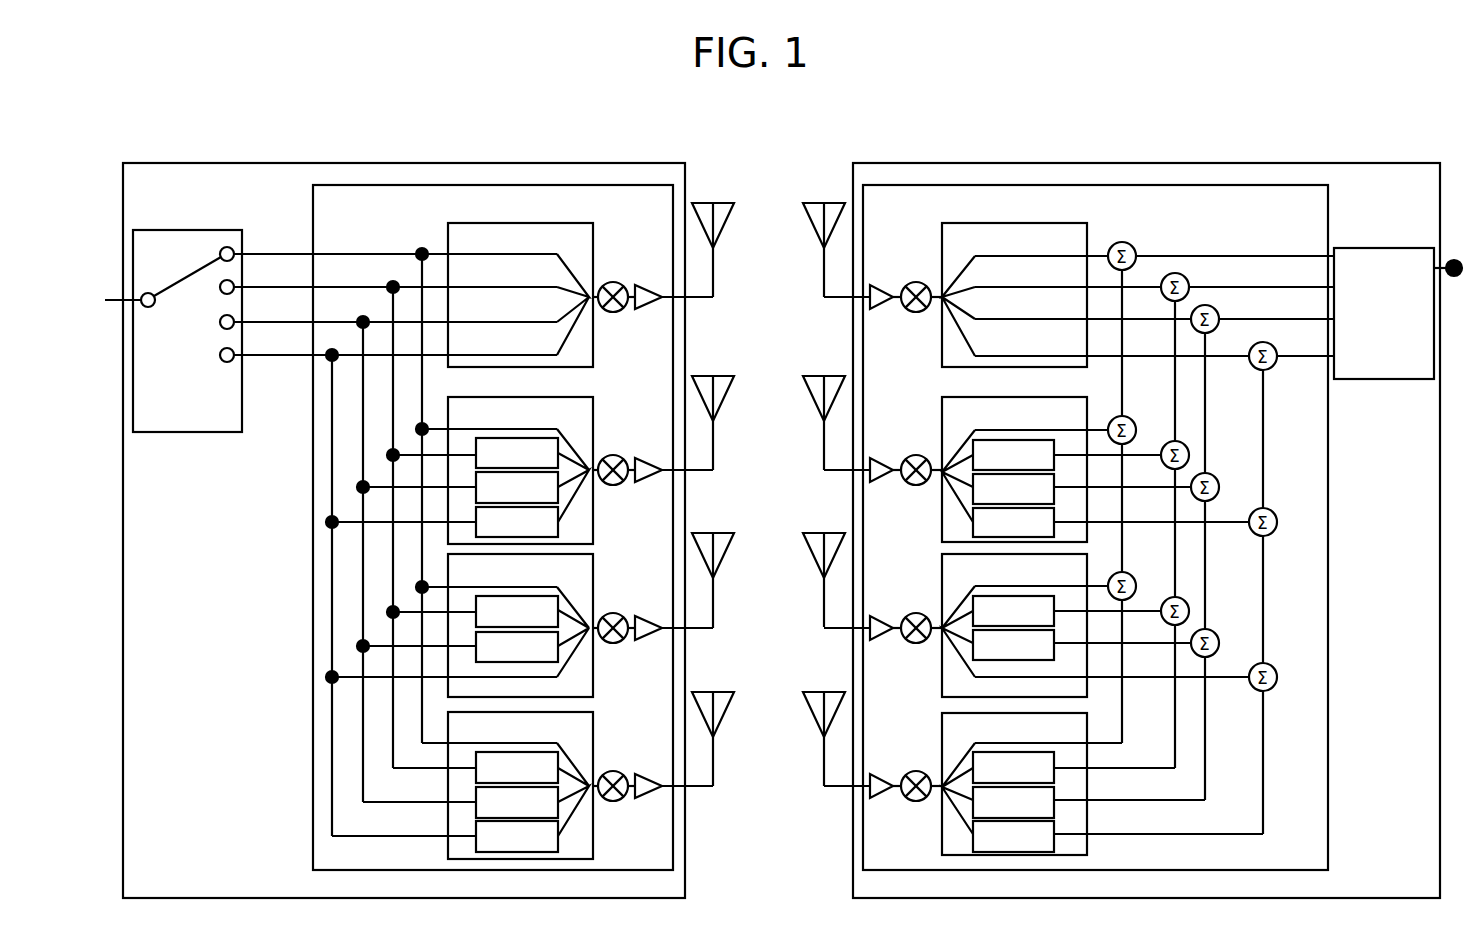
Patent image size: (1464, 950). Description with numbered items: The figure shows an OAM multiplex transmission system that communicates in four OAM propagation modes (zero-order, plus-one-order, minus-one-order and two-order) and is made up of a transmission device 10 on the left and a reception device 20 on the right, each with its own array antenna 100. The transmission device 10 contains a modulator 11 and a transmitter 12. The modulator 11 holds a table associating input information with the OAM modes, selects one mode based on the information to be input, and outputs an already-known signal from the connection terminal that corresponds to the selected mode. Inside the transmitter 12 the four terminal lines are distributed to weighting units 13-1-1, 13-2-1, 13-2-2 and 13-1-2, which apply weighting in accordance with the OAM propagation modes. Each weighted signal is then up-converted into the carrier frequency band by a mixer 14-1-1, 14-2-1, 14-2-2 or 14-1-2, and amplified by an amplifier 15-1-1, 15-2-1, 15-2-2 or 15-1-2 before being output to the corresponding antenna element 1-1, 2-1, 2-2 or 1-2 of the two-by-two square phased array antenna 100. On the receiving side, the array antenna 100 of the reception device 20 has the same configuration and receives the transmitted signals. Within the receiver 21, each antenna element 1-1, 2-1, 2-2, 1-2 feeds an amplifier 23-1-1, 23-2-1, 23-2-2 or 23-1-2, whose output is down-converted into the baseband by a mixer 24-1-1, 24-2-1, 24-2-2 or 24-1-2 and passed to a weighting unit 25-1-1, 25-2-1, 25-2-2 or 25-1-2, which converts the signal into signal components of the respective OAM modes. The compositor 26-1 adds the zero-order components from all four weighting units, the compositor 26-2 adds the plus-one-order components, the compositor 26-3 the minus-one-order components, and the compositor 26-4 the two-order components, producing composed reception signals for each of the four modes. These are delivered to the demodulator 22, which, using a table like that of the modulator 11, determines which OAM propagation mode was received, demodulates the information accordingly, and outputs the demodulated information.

The transmission device 10 is at (420, 157).
The modulator 11 is at (172, 229).
The transmitter 12 is at (313, 200).
The weighting unit 13-1-1 is at (558, 223).
The weighting unit 13-2-1 is at (556, 397).
The weighting unit 13-2-2 is at (593, 567).
The weighting unit 13-1-2 is at (593, 717).
The mixer 14-1-1 is at (620, 282).
The mixer 14-2-1 is at (620, 455).
The mixer 14-2-2 is at (620, 613).
The mixer 14-1-2 is at (620, 780).
The amplifier 15-1-1 is at (650, 310).
The amplifier 15-2-1 is at (650, 483).
The amplifier 15-2-2 is at (650, 641).
The amplifier 15-1-2 is at (650, 799).
The array antenna 100 is at (709, 184).
The antenna element 1-1 is at (726, 228).
The antenna element 2-1 is at (726, 401).
The antenna element 2-2 is at (726, 558).
The antenna element 1-2 is at (726, 717).
The reception device 20 is at (1108, 154).
The receiver 21 is at (1330, 192).
The demodulator 22 is at (1383, 248).
The amplifier 23-1-1 is at (900, 265).
The amplifier 23-2-1 is at (900, 438).
The amplifier 23-2-2 is at (870, 635).
The amplifier 23-1-2 is at (872, 798).
The mixer 24-1-1 is at (910, 314).
The mixer 24-2-1 is at (910, 487).
The mixer 24-2-2 is at (910, 644).
The mixer 24-1-2 is at (912, 802).
The weighting unit 25-1-1 is at (969, 223).
The weighting unit 25-2-1 is at (969, 397).
The weighting unit 25-2-2 is at (942, 587).
The weighting unit 25-1-2 is at (942, 746).
The compositor 26-1 is at (1122, 241).
The compositor 26-2 is at (1178, 274).
The compositor 26-3 is at (1210, 333).
The compositor 26-4 is at (1268, 370).